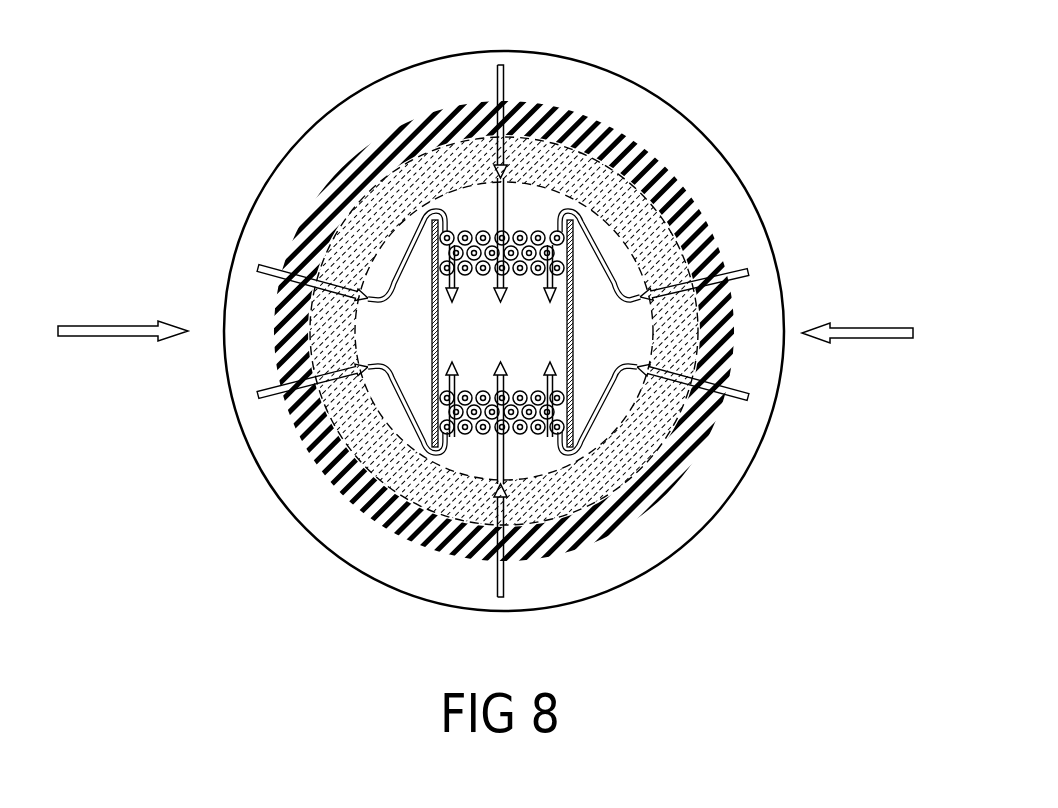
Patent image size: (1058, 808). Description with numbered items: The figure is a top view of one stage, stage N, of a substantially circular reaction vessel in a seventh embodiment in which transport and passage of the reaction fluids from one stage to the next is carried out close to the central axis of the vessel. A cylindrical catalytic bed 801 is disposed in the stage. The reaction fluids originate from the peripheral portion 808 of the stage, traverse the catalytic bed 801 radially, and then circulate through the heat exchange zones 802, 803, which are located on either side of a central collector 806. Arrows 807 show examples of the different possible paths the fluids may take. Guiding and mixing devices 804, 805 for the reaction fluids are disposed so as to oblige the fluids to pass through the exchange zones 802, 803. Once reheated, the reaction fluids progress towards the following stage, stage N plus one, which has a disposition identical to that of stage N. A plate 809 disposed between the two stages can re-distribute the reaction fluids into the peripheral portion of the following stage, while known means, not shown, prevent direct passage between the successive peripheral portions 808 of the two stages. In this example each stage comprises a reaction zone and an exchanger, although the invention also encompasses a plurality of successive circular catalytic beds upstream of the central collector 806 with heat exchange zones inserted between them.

The cylindrical catalytic bed 801 is at (627, 147).
The heat exchange zone 802 is at (518, 225).
The heat exchange zone 803 is at (530, 417).
The guiding and mixing device 804 is at (573, 373).
The guiding and mixing device 805 is at (420, 378).
The central collector 806 is at (477, 327).
The arrows 807 is at (580, 418).
The peripheral portion 808 is at (293, 173).
The plate 809 is at (707, 243).